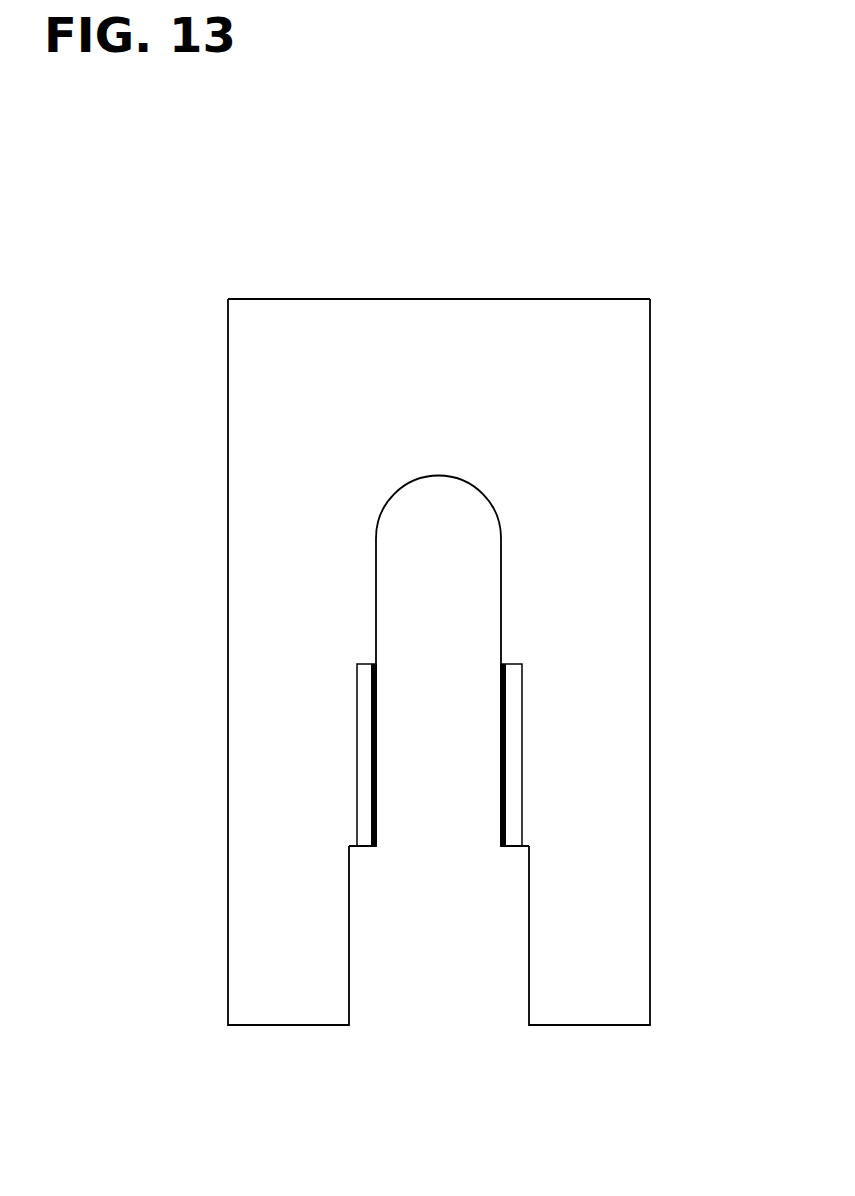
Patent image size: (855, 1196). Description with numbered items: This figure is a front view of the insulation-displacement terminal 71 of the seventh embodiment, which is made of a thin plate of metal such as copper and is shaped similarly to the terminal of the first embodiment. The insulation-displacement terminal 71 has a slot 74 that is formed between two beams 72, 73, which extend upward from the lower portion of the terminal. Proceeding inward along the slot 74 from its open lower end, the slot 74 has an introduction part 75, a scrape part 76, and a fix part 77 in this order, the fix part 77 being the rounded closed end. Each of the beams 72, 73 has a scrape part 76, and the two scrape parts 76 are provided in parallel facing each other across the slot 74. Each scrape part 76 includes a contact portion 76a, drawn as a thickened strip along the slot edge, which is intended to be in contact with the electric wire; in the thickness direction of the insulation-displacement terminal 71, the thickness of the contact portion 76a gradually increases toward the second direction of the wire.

The insulation-displacement terminal 71 is at (661, 326).
The beam 72 is at (235, 908).
The beam 73 is at (640, 912).
The slot 74 is at (445, 1013).
The introduction part 75 is at (527, 942).
The scrape part 76 is at (490, 796).
The contact portion 76a is at (498, 712).
The fix part 77 is at (499, 548).